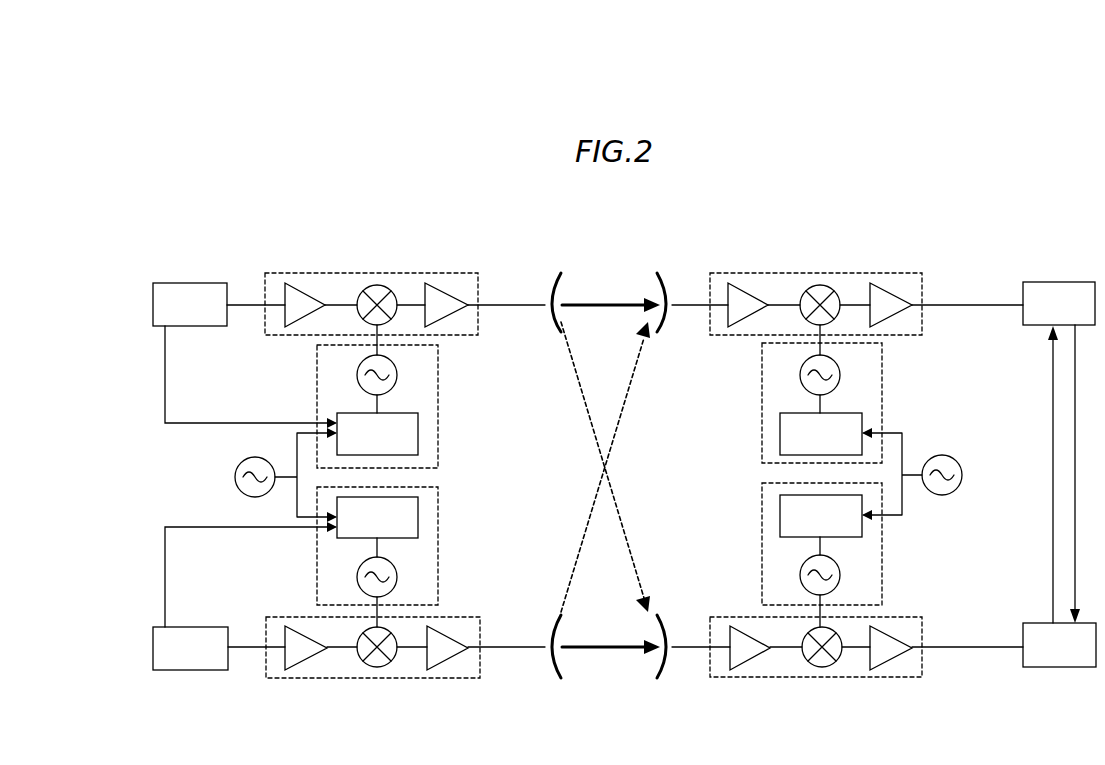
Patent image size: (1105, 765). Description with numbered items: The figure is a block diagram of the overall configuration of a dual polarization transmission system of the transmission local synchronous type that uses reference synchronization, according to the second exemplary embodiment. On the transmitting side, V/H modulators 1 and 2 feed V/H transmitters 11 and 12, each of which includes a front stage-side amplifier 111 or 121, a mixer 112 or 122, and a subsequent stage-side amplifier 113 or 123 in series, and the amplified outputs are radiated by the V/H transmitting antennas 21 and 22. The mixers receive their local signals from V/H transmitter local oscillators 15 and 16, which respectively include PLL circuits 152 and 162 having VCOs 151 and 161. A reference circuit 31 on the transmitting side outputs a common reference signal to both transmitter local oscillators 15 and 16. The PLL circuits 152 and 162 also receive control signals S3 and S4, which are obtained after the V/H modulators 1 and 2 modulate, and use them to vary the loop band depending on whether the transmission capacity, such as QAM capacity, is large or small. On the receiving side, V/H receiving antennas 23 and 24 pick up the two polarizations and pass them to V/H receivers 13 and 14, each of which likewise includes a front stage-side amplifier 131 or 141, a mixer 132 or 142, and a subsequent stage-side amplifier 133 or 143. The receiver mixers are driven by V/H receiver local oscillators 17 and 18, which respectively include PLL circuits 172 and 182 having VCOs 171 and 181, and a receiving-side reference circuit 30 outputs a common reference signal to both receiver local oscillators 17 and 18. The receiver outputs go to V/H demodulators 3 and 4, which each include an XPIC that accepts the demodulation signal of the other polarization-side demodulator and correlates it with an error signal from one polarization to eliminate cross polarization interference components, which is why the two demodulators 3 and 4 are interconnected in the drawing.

The V modulator 1 is at (191, 328).
The H modulator 2 is at (190, 626).
The V demodulator 3 is at (1022, 310).
The H demodulator 4 is at (1022, 634).
The V transmitter 11 is at (375, 319).
The H transmitter 12 is at (381, 642).
The V receiver 13 is at (821, 314).
The H receiver 14 is at (822, 639).
The V transmitter local oscillator 15 is at (385, 396).
The H transmitter local oscillator 16 is at (414, 557).
The V receiver local oscillator 17 is at (828, 395).
The H receiver local oscillator 18 is at (782, 553).
The V transmitting antenna 21 is at (551, 320).
The H transmitting antenna 22 is at (551, 625).
The V receiving antenna 23 is at (667, 329).
The H receiving antenna 24 is at (669, 630).
The reference circuit 30 is at (963, 475).
The reference circuit 31 is at (234, 477).
The front stage-side amplifier 111 is at (300, 292).
The mixer 112 is at (375, 286).
The subsequent stage-side amplifier 113 is at (450, 292).
The front stage-side amplifier 121 is at (296, 679).
The mixer 122 is at (385, 672).
The subsequent stage-side amplifier 123 is at (462, 672).
The front stage-side amplifier 131 is at (750, 290).
The mixer 132 is at (823, 286).
The subsequent stage-side amplifier 133 is at (893, 292).
The front stage-side amplifier 141 is at (742, 678).
The mixer 142 is at (830, 672).
The subsequent stage-side amplifier 143 is at (900, 672).
The VCO 151 is at (350, 380).
The PLL circuit 152 is at (419, 436).
The VCO 161 is at (398, 577).
The PLL circuit 162 is at (419, 503).
The VCO 171 is at (802, 380).
The PLL circuit 172 is at (863, 400).
The VCO 181 is at (800, 576).
The PLL circuit 182 is at (779, 500).
The control signal S3 is at (164, 395).
The control signal S4 is at (164, 556).